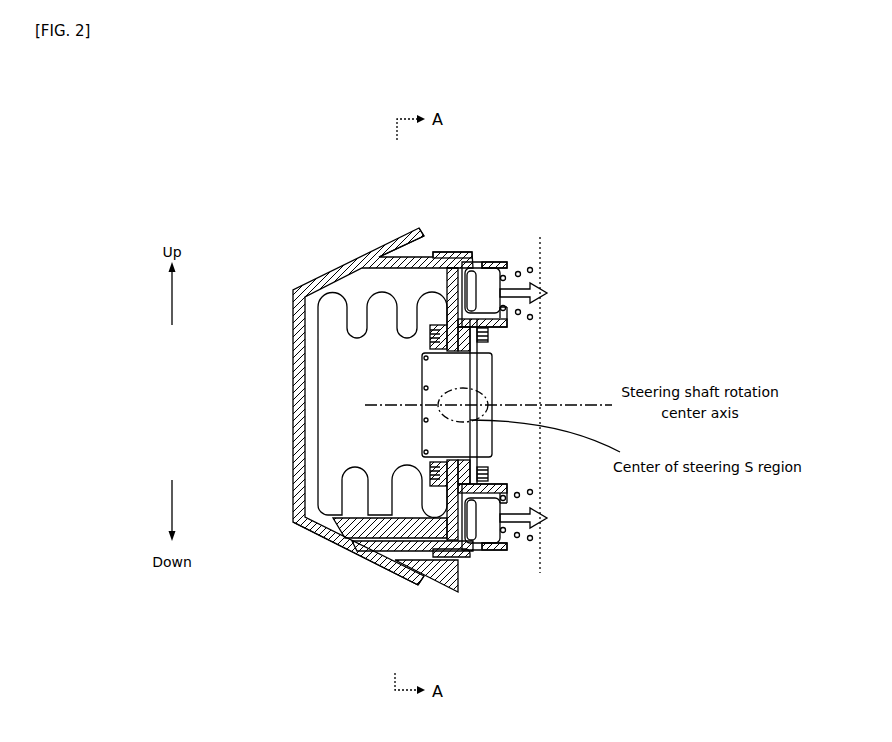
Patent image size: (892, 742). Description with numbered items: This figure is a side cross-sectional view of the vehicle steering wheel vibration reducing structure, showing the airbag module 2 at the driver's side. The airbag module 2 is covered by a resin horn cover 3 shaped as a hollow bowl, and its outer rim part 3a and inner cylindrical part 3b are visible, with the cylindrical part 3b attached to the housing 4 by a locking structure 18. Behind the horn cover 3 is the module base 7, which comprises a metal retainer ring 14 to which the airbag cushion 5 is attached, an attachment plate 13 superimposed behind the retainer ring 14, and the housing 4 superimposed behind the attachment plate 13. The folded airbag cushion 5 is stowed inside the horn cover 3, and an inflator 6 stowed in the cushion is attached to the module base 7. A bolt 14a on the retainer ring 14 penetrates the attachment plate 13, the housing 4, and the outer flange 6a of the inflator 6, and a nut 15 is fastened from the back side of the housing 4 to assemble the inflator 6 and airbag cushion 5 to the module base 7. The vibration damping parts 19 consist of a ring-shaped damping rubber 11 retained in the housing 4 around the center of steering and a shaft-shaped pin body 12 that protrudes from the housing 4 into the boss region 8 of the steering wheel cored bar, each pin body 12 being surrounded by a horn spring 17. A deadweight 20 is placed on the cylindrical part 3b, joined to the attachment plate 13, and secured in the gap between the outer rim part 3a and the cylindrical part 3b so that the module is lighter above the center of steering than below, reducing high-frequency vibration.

The airbag module 2 is at (292, 233).
The horn cover 3 is at (290, 523).
The outer rim part 3a is at (414, 230).
The cylindrical part 3b is at (398, 249).
The housing 4 is at (505, 258).
The airbag cushion 5 is at (318, 309).
The inflator 6 is at (419, 381).
The outer flange 6a is at (478, 436).
The module base 7 is at (456, 236).
The boss region 8 is at (541, 571).
The damping rubber 11 is at (485, 283).
The pin body 12 is at (527, 300).
The attachment plate 13 is at (448, 270).
The retainer ring 14 is at (428, 327).
The bolt 14a is at (430, 467).
The nut 15 is at (493, 469).
The horn spring 17 is at (520, 320).
The locking structure 18 is at (477, 241).
The vibration damping part 19 is at (491, 343).
The deadweight 20 is at (348, 546).